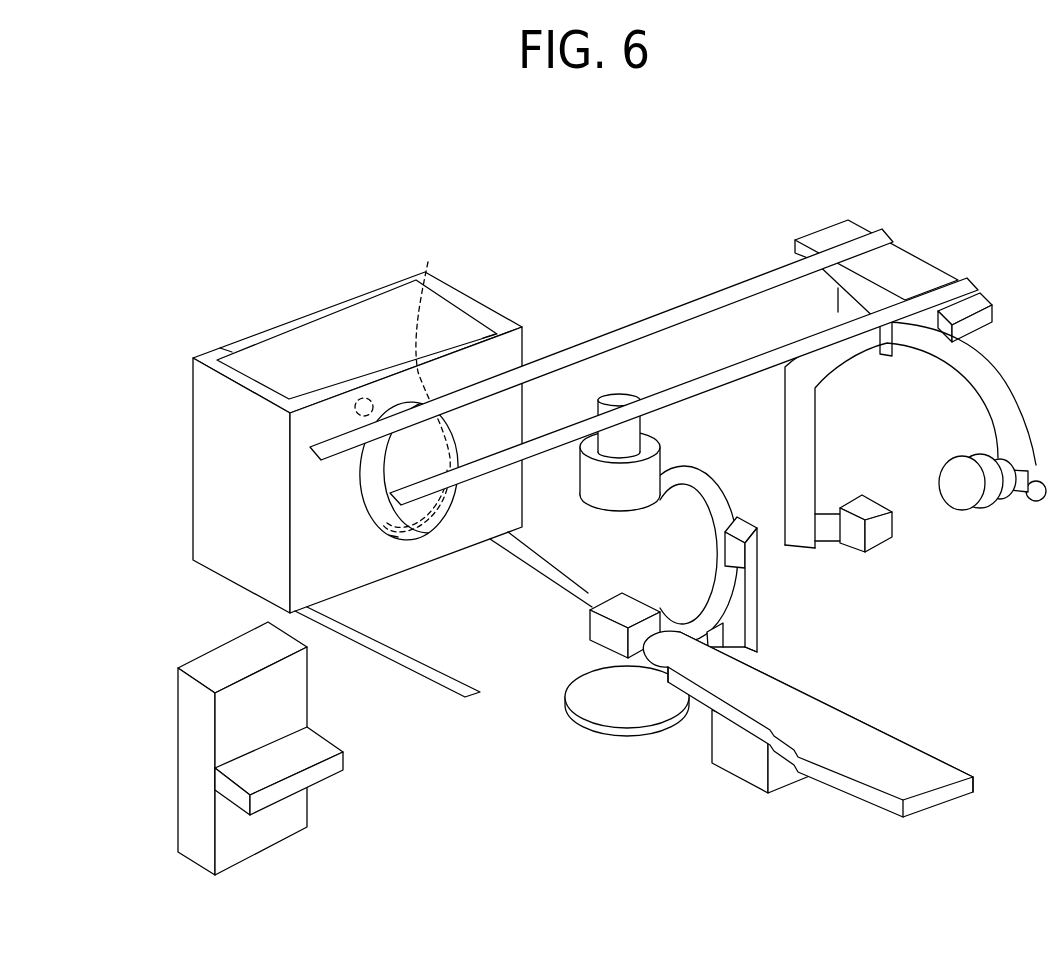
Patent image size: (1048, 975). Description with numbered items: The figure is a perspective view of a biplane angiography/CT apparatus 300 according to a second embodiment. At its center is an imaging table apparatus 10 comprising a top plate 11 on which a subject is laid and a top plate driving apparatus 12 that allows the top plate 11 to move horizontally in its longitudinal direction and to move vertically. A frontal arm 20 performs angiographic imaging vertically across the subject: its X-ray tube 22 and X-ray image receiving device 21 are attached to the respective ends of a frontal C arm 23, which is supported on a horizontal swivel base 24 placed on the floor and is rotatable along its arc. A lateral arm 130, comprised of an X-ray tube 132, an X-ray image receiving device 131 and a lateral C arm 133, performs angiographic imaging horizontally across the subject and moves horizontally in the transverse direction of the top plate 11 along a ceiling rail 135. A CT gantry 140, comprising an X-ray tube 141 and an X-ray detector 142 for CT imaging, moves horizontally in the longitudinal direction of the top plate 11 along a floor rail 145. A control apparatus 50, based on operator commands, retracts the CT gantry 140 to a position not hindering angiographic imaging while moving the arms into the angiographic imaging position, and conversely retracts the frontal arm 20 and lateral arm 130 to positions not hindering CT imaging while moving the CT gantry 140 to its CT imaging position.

The biplane angiography/CT apparatus 300 is at (1033, 108).
The CT gantry 140 is at (357, 387).
The X-ray tube 141 is at (363, 398).
The X-ray detector 142 is at (416, 381).
The ceiling rail 135 is at (688, 308).
The floor rail 145 is at (422, 664).
The frontal arm 20 is at (568, 607).
The X-ray image receiving device 21 is at (607, 497).
The X-ray tube 22 is at (600, 632).
The frontal C arm 23 is at (687, 597).
The horizontal swivel base 24 is at (610, 702).
The imaging table apparatus 10 is at (808, 765).
The top plate 11 is at (822, 745).
The top plate driving apparatus 12 is at (750, 763).
The lateral arm 130 is at (915, 452).
The X-ray image receiving device 131 is at (968, 495).
The X-ray tube 132 is at (858, 553).
The lateral C arm 133 is at (990, 392).
The control apparatus 50 is at (317, 773).